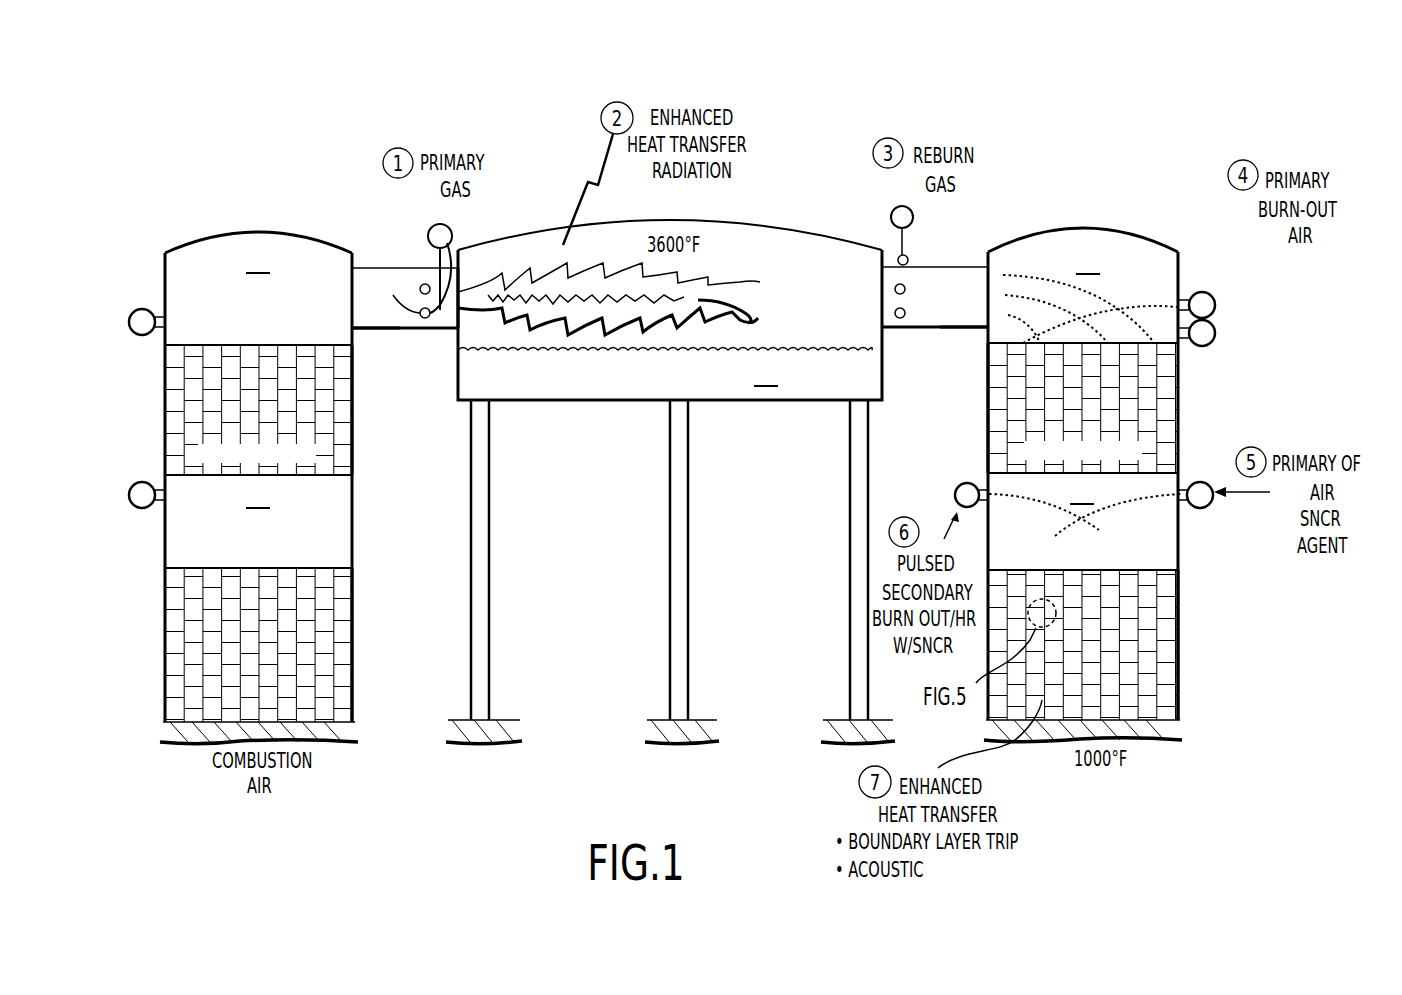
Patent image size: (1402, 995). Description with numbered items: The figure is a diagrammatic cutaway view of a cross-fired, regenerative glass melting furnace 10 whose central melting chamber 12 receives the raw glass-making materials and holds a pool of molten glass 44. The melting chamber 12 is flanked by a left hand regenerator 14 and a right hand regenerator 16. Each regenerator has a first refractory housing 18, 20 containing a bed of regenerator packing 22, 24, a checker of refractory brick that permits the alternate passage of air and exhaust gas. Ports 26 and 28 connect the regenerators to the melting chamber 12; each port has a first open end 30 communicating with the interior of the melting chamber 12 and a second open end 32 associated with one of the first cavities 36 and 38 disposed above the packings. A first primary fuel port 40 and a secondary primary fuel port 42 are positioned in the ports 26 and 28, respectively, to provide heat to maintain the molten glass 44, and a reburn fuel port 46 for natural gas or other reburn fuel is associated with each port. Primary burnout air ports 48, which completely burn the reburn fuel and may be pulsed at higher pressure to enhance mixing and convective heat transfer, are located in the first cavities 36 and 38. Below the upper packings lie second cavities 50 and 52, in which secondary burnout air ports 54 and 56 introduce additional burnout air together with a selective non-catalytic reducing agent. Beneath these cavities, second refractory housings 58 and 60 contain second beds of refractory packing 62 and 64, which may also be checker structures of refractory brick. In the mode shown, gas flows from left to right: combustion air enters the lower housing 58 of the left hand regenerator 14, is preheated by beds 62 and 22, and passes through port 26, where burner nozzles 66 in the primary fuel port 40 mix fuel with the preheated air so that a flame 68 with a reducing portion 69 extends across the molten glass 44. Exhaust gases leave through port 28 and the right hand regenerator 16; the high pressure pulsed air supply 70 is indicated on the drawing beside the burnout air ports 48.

The glass melting furnace 10 is at (810, 110).
The melting chamber 12 is at (790, 250).
The left hand regenerator 14 is at (283, 220).
The right hand regenerator 16 is at (1110, 219).
The first refractory housing 18 is at (353, 453).
The first refractory housing 20 is at (988, 450).
The bed of regenerator packing 22 is at (307, 417).
The bed of regenerator packing 24 is at (1020, 410).
The port 26 is at (413, 333).
The port 28 is at (933, 333).
The first open end 30 is at (455, 333).
The second open end 32 is at (355, 335).
The first cavity 36 is at (262, 286).
The first cavity 38 is at (1090, 293).
The first primary fuel port 40 is at (420, 285).
The secondary primary fuel port 42 is at (906, 310).
The pool of molten glass 44 is at (665, 367).
The reburn fuel port 46 is at (913, 215).
The primary burnout air port 48 is at (142, 336).
The second cavity 50 is at (258, 521).
The second cavity 52 is at (1104, 521).
The secondary burnout air port 54 is at (130, 488).
The secondary burnout air port 56 is at (1200, 482).
The second refractory housing 58 is at (353, 617).
The second refractory housing 60 is at (1180, 615).
The second bed of refractory packing 62 is at (308, 673).
The second bed of refractory packing 64 is at (1129, 666).
The burner nozzles 66 is at (420, 289).
The flame 68 is at (760, 282).
The reducing portion 69 is at (738, 318).
The high pressure pulsed air supply 70 is at (1260, 319).